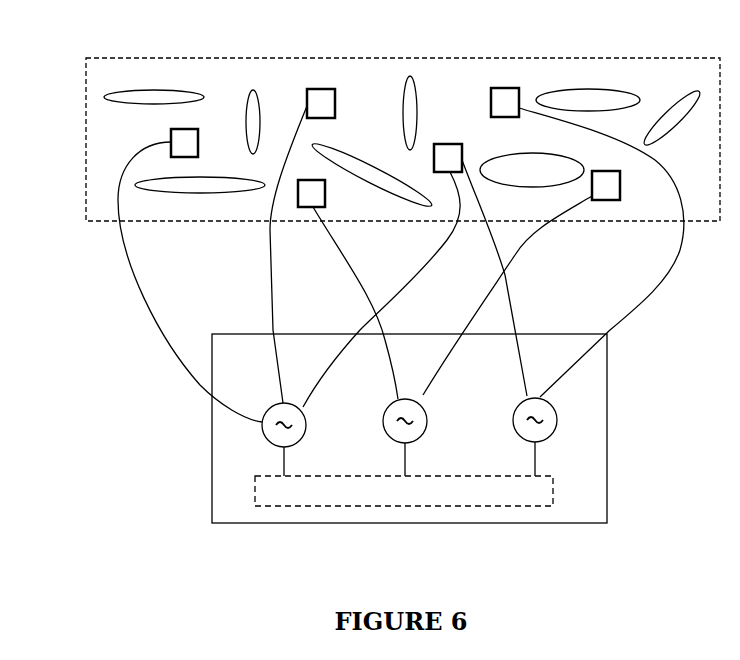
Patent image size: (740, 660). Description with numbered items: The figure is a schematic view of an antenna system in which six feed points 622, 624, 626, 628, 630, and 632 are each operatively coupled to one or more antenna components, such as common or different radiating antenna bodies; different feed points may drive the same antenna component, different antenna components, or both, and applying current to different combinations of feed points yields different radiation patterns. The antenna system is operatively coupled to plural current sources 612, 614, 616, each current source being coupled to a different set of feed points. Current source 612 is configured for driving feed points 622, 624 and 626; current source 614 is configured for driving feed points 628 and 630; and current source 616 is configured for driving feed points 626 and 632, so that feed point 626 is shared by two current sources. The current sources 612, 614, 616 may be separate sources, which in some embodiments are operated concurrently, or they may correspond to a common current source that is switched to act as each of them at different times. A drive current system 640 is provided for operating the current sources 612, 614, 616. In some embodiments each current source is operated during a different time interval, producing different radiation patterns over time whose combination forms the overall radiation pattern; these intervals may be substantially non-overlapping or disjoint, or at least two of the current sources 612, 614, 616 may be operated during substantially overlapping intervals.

The current source 612 is at (261, 427).
The current source 614 is at (407, 397).
The current source 616 is at (558, 420).
The feed point 622 is at (172, 132).
The feed point 624 is at (325, 89).
The feed point 626 is at (444, 144).
The feed point 628 is at (304, 207).
The feed point 630 is at (602, 200).
The feed point 632 is at (513, 90).
The drive current system 640 is at (553, 491).